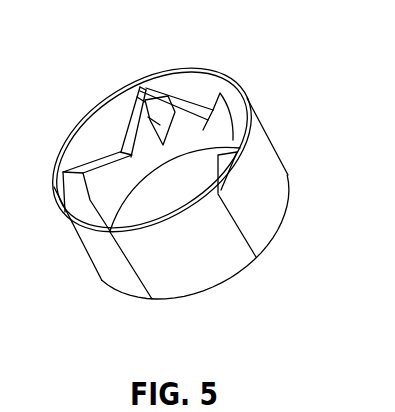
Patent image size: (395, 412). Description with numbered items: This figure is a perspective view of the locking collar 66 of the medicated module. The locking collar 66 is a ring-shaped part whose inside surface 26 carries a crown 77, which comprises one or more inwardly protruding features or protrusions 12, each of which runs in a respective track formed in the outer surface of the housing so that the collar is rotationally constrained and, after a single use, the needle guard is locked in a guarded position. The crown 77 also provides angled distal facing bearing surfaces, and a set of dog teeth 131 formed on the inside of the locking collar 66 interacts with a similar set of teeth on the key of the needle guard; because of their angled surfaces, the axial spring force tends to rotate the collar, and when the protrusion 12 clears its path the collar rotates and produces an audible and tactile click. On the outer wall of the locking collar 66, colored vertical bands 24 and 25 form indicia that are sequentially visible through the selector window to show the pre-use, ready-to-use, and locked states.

The inwardly protruding feature 12 is at (138, 127).
The color vertical band 24 is at (270, 190).
The color vertical band 25 is at (217, 265).
The inside surface 26 is at (97, 137).
The locking collar 66 is at (290, 110).
The crown 77 is at (213, 105).
The dog teeth 131 is at (185, 100).